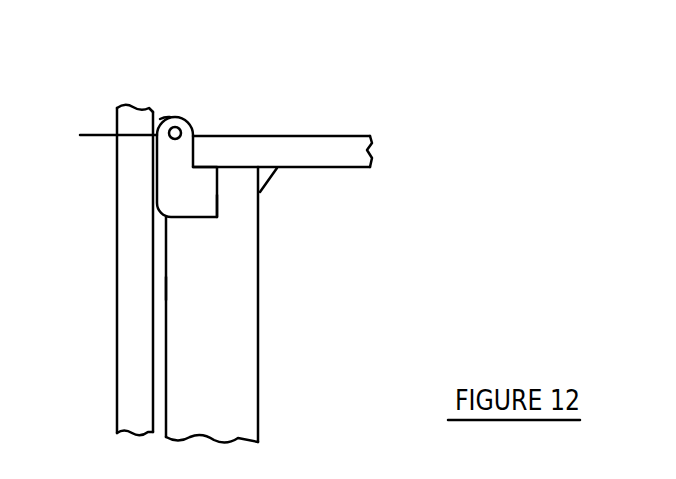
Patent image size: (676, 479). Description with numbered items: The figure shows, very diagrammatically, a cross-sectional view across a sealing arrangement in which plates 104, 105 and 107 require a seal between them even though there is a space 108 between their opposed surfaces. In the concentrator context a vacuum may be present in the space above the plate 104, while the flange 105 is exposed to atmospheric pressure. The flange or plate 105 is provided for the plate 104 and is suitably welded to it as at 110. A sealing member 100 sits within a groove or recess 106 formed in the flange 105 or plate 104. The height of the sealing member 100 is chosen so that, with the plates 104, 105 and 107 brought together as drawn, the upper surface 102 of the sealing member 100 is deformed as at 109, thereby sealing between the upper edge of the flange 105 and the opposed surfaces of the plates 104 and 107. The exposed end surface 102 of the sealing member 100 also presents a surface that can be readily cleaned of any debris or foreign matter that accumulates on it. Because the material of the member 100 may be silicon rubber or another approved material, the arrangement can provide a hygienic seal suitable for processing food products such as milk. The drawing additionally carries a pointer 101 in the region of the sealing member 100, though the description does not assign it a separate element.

The sealing member 100 is at (178, 192).
The pivot pin 101 is at (184, 119).
The upper surface of the sealing member 102 is at (165, 119).
The plate 104 is at (372, 152).
The flange 105 is at (258, 283).
The groove or recess 106 is at (217, 195).
The plate 107 is at (117, 238).
The space 108 is at (158, 277).
The deformation of the sealing member 109 is at (99, 135).
The weld 110 is at (274, 178).